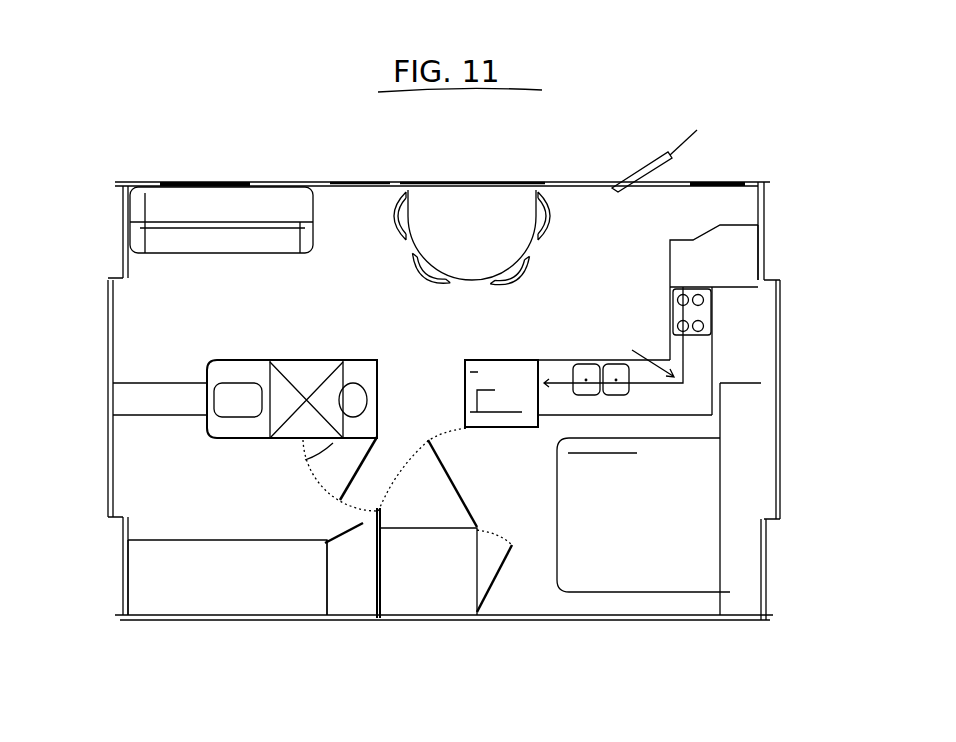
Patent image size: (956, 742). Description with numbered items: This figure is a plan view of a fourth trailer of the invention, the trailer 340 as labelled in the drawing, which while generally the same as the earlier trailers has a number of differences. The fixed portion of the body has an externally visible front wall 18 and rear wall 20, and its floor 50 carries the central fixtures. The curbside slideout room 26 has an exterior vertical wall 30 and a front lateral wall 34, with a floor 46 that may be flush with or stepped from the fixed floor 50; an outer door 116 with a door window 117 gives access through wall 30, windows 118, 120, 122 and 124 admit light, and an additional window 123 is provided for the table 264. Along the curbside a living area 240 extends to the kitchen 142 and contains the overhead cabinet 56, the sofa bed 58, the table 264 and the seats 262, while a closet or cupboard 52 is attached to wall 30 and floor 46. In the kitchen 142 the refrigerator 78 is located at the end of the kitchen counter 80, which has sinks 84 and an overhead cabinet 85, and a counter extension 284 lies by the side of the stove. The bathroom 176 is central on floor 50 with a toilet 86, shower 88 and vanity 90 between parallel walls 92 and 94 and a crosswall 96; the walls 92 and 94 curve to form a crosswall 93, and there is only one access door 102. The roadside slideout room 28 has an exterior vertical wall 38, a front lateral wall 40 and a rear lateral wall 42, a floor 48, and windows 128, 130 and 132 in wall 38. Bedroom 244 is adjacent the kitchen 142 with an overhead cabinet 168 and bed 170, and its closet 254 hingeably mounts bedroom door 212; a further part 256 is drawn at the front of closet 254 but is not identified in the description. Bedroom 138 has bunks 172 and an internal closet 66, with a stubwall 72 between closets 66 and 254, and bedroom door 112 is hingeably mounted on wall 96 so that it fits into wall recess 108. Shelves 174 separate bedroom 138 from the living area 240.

The curbside slideout room 26 is at (512, 156).
The window 120 is at (250, 182).
The exterior vertical wall 30 is at (357, 182).
The additional window 123 is at (470, 182).
The door window 117 is at (650, 170).
The outer door 116 is at (703, 122).
The window 122 is at (722, 182).
The right side wall 340 is at (783, 210).
The window 124 is at (768, 242).
The window 118 is at (122, 235).
The front lateral wall 34 is at (120, 276).
The overhead cabinet 56 is at (221, 220).
The extendible sofa-bed 58 is at (254, 250).
The table 264 is at (500, 244).
The seats 262 is at (552, 224).
The living area 240 is at (385, 284).
The access door 102 is at (285, 360).
The floor 46 is at (660, 258).
The counter extension 284 is at (745, 278).
The closet or cupboard 52 is at (672, 318).
The overhead cabinet 85 is at (700, 411).
The sinks 84 is at (613, 372).
The kitchen counter 80 is at (651, 349).
The kitchen 142 is at (548, 350).
The refrigerator 78 is at (501, 393).
The crosswall 96 is at (414, 348).
The floor 50 is at (440, 402).
The parallel wall 92 is at (250, 360).
The toilet 86 is at (254, 409).
The shower 88 is at (322, 412).
The vanity 90 is at (353, 400).
The crosswall 93 is at (210, 400).
The parallel wall 94 is at (250, 440).
The bathroom 176 is at (225, 430).
The shelves 174 is at (153, 387).
The front wall 18 is at (112, 421).
The wall recess 108 is at (319, 474).
The bedroom door 112 is at (362, 465).
The stubwall 72 is at (380, 516).
The bedroom door 212 is at (468, 488).
The bed 170 is at (678, 548).
The bedroom 244 is at (596, 430).
The overhead cabinet 168 is at (740, 483).
The floor 48 is at (550, 522).
The rear wall 20 is at (790, 402).
The rear lateral wall 42 is at (775, 555).
The bunks 172 is at (252, 598).
The bedroom 138 is at (318, 526).
The closet or cupboard 66 is at (364, 596).
The closet 254 is at (462, 598).
The closet door 256 is at (497, 572).
The front lateral wall 40 is at (123, 527).
The window 132 is at (120, 570).
The window 130 is at (232, 625).
The exterior vertical wall 38 is at (348, 625).
The roadside slideout room 28 is at (440, 632).
The window 128 is at (590, 625).